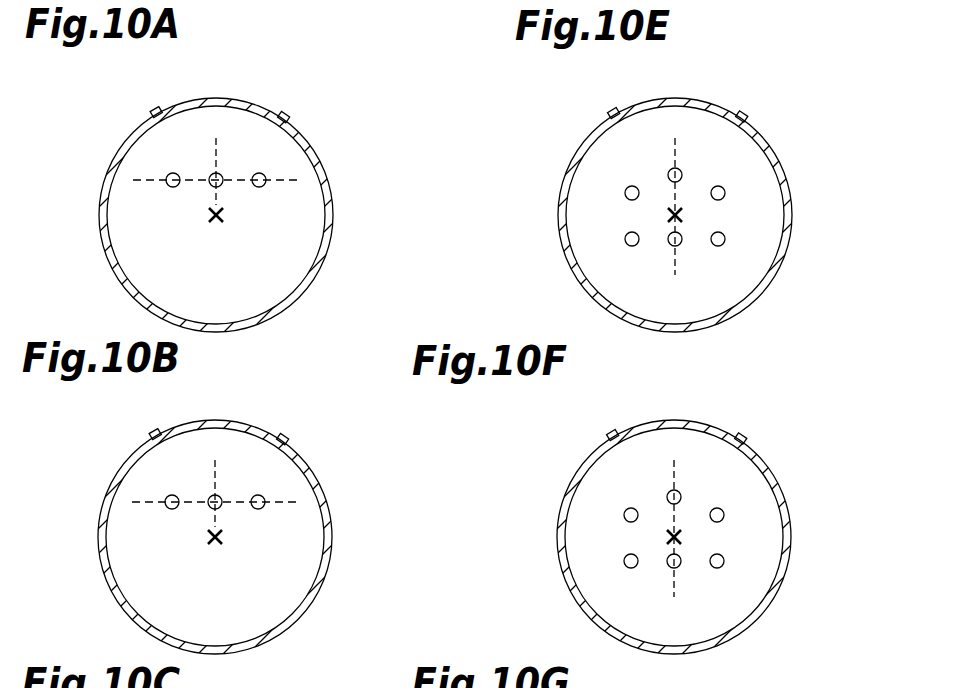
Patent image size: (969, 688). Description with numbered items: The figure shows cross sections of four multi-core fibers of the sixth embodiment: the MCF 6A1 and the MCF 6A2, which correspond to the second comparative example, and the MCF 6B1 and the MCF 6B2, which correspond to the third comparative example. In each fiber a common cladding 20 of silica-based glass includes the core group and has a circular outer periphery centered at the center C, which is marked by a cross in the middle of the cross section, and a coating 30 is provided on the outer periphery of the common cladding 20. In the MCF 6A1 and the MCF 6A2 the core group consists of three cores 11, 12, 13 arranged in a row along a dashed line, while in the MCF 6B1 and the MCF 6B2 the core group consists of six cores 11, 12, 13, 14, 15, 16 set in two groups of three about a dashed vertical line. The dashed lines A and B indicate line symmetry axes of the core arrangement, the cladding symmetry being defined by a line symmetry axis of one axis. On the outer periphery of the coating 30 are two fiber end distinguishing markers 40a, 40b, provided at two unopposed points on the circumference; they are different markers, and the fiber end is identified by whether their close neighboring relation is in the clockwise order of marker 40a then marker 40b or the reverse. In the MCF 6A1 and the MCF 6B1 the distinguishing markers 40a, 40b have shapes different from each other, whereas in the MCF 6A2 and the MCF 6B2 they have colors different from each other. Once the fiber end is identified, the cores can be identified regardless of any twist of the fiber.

In FIG. 10A, the MCF 6A1 is at (228, 192).
In FIG. 10B, the MCF 6A2 is at (234, 514).
In FIG. 10E, the MCF 6B1 is at (693, 211).
In FIG. 10F, the MCF 6B2 is at (692, 531).
In FIG. 10A, the core 11 is at (138, 146).
In FIG. 10B, the core 11 is at (137, 469).
In FIG. 10E, the core 11 is at (598, 157).
In FIG. 10F, the core 11 is at (597, 480).
In FIG. 10A, the core 12 is at (238, 131).
In FIG. 10B, the core 12 is at (237, 452).
In FIG. 10E, the core 12 is at (697, 128).
In FIG. 10F, the core 12 is at (696, 449).
In FIG. 10A, the core 13 is at (294, 146).
In FIG. 10B, the core 13 is at (293, 467).
In FIG. 10E, the core 13 is at (752, 152).
In FIG. 10F, the core 13 is at (751, 473).
In FIG. 10E, the core 14 is at (609, 291).
In FIG. 10F, the core 14 is at (608, 614).
In FIG. 10E, the core 15 is at (661, 301).
In FIG. 10F, the core 15 is at (660, 621).
In FIG. 10E, the core 16 is at (743, 291).
In FIG. 10F, the core 16 is at (742, 614).
In FIG. 10A, the common cladding 20 is at (239, 215).
In FIG. 10B, the common cladding 20 is at (238, 537).
In FIG. 10E, the common cladding 20 is at (701, 215).
In FIG. 10F, the common cladding 20 is at (700, 537).
In FIG. 10A, the coating 30 is at (189, 215).
In FIG. 10B, the coating 30 is at (194, 537).
In FIG. 10E, the coating 30 is at (703, 215).
In FIG. 10F, the coating 30 is at (702, 537).
In FIG. 10A, the fiber end distinguishing marker 40a is at (127, 88).
In FIG. 10B, the fiber end distinguishing marker 40a is at (125, 410).
In FIG. 10E, the fiber end distinguishing marker 40a is at (586, 88).
In FIG. 10F, the fiber end distinguishing marker 40a is at (584, 410).
In FIG. 10A, the fiber end distinguishing marker 40b is at (315, 88).
In FIG. 10B, the fiber end distinguishing marker 40b is at (314, 410).
In FIG. 10E, the fiber end distinguishing marker 40b is at (773, 87).
In FIG. 10F, the fiber end distinguishing marker 40b is at (772, 409).
In FIG. 10A, the line symmetry axis A is at (199, 132).
In FIG. 10B, the line symmetry axis A is at (200, 453).
In FIG. 10E, the line symmetry axis A is at (659, 167).
In FIG. 10F, the line symmetry axis A is at (657, 488).
In FIG. 10A, the line symmetry axis B is at (250, 215).
In FIG. 10B, the line symmetry axis B is at (249, 537).
In FIG. 10A, the center position C is at (141, 207).
In FIG. 10B, the center position C is at (140, 542).
In FIG. 10E, the center position C is at (600, 207).
In FIG. 10F, the center position C is at (599, 542).